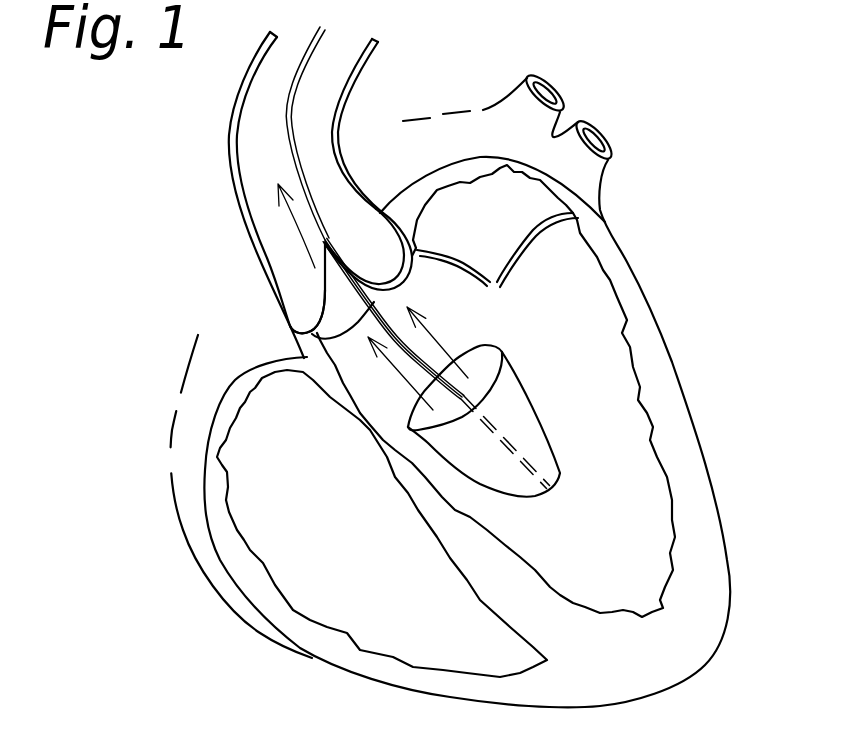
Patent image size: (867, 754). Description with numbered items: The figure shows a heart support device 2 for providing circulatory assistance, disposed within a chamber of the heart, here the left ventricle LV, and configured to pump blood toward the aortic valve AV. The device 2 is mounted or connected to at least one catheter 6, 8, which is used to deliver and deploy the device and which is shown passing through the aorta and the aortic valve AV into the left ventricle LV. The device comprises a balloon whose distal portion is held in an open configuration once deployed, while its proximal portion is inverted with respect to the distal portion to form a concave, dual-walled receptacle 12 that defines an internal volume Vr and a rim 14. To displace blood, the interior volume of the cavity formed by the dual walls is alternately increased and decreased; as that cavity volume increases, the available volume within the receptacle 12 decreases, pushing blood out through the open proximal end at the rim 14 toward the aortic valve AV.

The heart support device 2 is at (345, 291).
The catheter 6 is at (303, 345).
The catheter 8 is at (331, 363).
The dual-walled receptacle 12 is at (552, 420).
The rim 14 is at (428, 425).
The aortic valve AV is at (335, 292).
The left ventricle LV is at (600, 350).
The internal volume Vr is at (474, 365).